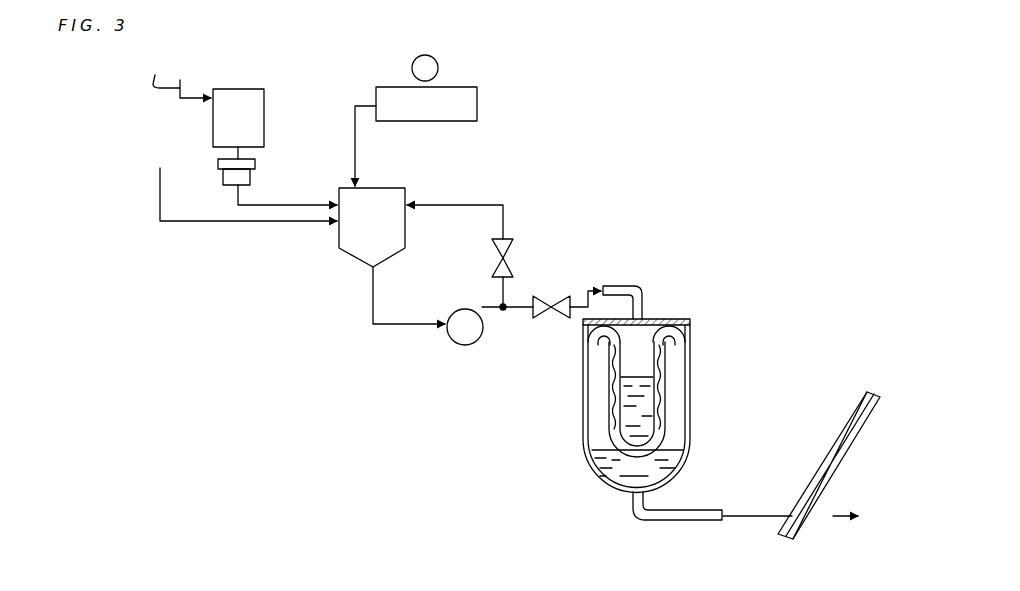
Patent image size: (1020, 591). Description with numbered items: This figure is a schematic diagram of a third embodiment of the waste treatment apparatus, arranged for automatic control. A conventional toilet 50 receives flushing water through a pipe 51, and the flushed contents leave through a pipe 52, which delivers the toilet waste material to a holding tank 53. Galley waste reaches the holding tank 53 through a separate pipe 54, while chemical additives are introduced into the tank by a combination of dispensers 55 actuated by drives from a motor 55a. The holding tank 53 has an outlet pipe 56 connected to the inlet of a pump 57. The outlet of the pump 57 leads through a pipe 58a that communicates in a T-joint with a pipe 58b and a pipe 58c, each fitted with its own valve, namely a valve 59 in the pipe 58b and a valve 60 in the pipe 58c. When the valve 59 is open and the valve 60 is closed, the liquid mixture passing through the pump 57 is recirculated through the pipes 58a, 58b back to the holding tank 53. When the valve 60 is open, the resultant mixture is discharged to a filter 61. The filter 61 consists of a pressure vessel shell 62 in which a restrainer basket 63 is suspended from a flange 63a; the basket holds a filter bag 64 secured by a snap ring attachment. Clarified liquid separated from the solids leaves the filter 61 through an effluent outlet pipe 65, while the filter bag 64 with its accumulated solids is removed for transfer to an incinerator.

The toilet 50 is at (226, 89).
The pipe 51 is at (173, 76).
The pipe 52 is at (272, 204).
The holding tank 53 is at (348, 253).
The pipe 54 is at (180, 222).
The dispensers 55 is at (388, 86).
The motor 55a is at (427, 55).
The outlet pipe 56 is at (395, 328).
The pump 57 is at (468, 345).
The pipe 58a is at (495, 310).
The pipe 58b is at (505, 227).
The pipe 58c is at (580, 288).
The valve 59 is at (505, 262).
The valve 60 is at (538, 297).
The filter 61 is at (624, 419).
The pressure vessel shell 62 is at (583, 433).
The restrainer basket 63 is at (663, 391).
The flange 63a is at (687, 330).
The filter bag 64 is at (620, 387).
The effluent outlet pipe 65 is at (832, 513).